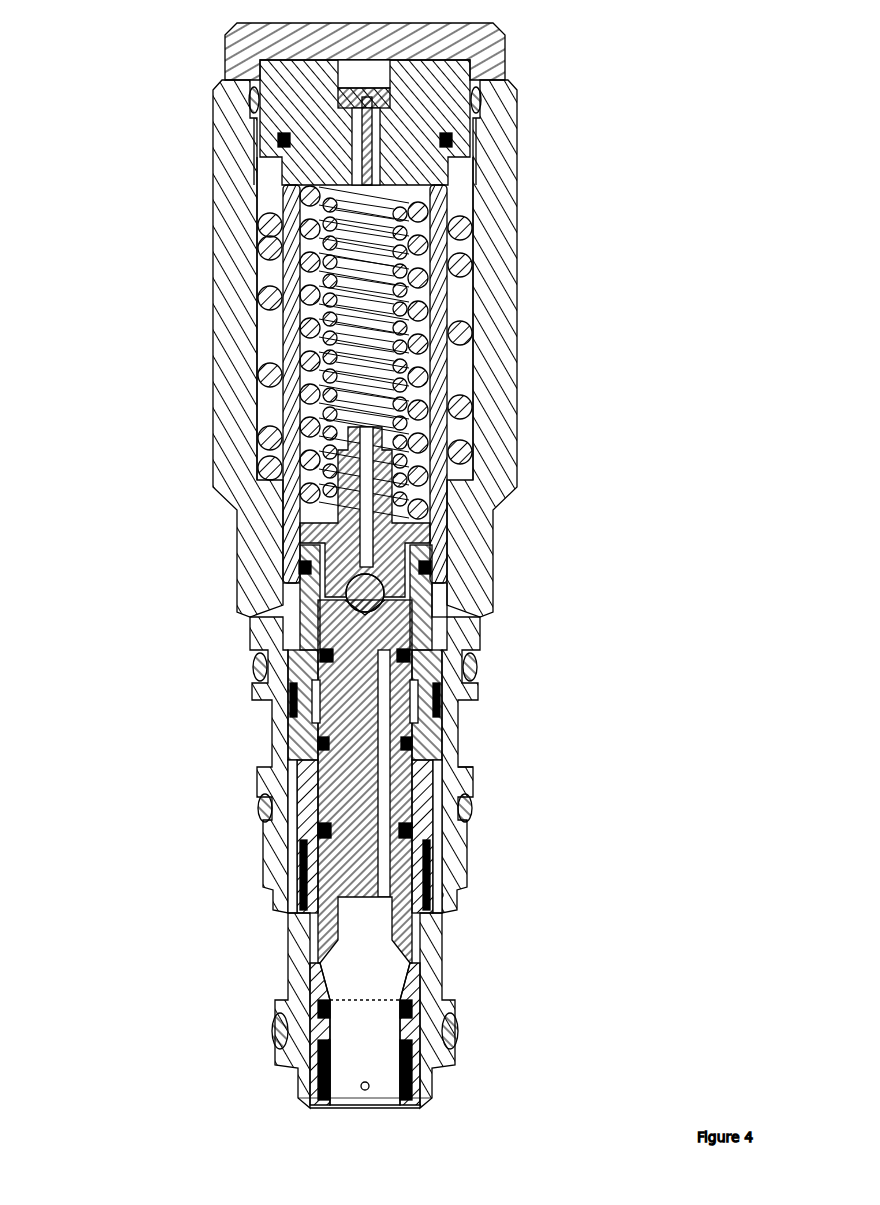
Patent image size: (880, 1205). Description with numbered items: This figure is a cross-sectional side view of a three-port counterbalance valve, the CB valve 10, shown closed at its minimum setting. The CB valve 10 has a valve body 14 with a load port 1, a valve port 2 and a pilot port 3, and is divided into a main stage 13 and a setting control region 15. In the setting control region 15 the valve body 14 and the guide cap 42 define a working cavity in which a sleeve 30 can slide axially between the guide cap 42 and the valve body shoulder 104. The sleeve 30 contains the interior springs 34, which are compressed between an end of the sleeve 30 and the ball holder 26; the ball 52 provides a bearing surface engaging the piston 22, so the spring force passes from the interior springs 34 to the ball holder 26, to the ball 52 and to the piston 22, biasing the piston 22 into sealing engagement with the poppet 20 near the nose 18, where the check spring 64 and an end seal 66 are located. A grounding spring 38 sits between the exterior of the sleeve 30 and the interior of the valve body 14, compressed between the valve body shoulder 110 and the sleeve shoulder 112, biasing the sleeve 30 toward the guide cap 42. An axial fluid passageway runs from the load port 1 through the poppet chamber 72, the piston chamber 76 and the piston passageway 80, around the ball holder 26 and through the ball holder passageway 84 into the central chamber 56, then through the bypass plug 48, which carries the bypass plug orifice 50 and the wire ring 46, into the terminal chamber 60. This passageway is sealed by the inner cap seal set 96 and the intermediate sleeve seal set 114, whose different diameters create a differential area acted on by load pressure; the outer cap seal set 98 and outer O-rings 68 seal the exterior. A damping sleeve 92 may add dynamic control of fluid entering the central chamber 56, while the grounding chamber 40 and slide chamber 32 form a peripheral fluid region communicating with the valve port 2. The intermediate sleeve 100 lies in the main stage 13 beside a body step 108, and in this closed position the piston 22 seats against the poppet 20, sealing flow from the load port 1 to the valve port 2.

The load port 1 is at (365, 1100).
The valve port 2 is at (275, 944).
The pilot port 3 is at (258, 720).
The CB valve 10 is at (618, 816).
The main stage 13 is at (270, 863).
The valve body 14 is at (500, 290).
The setting control region 15 is at (44, 334).
The nose 18 is at (285, 1092).
The poppet 20 is at (435, 1070).
The piston 22 is at (322, 875).
The ball holder 26 is at (300, 567).
The sleeve 30 is at (290, 210).
The slide chamber 32 is at (300, 640).
The interior springs 34 is at (310, 385).
The grounding spring 38 is at (270, 298).
The grounding chamber 40 is at (275, 415).
The guide cap 42 is at (485, 40).
The wire ring 46 is at (478, 170).
The bypass plug 48 is at (252, 90).
The bypass plug orifice 50 is at (358, 130).
The ball 52 is at (380, 590).
The central chamber 56 is at (330, 345).
The terminal chamber 60 is at (364, 74).
The check spring 64 is at (420, 1100).
The O-ring 66 is at (275, 1035).
The outer O-ring 68 is at (254, 667).
The poppet chamber 72 is at (365, 1045).
The piston chamber 76 is at (365, 877).
The piston passageway 80 is at (445, 892).
The ball holder passageway 84 is at (395, 530).
The damping sleeve 92 is at (440, 617).
The inner cap seal set 96 is at (452, 140).
The outer cap seal set 98 is at (480, 100).
The intermediate sleeve 100 is at (440, 830).
The valve body shoulder 104 is at (288, 650).
The shoulder 108 is at (470, 785).
The valve body shoulder for grounding spring 110 is at (270, 465).
The sleeve shoulder 112 is at (270, 248).
The intermediate sleeve seal set 114 is at (300, 575).